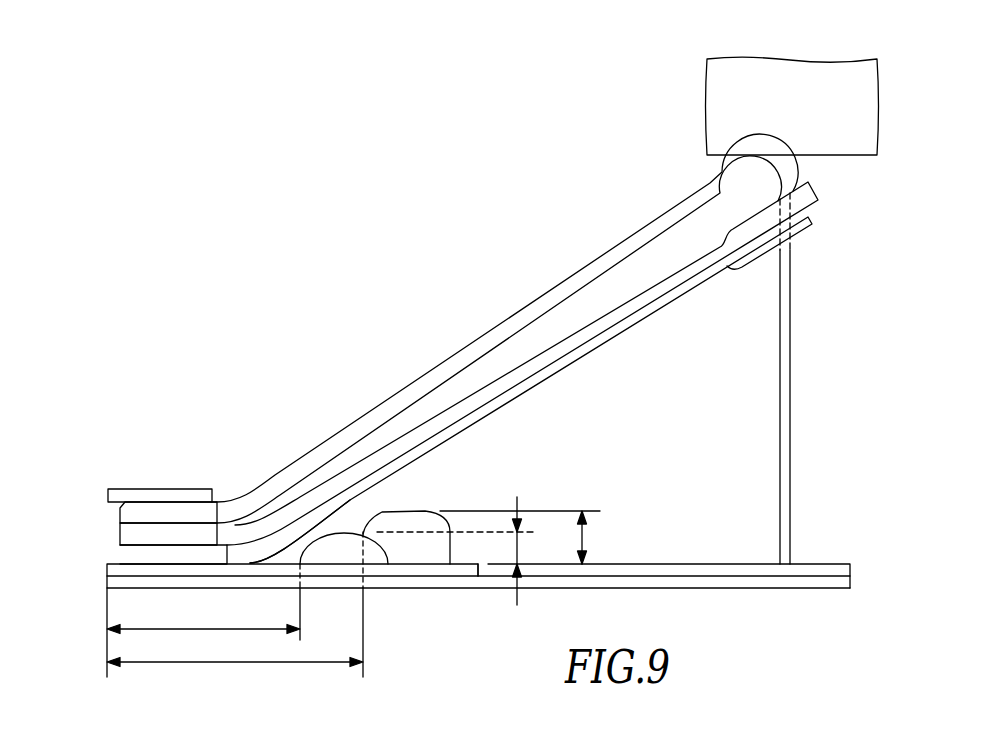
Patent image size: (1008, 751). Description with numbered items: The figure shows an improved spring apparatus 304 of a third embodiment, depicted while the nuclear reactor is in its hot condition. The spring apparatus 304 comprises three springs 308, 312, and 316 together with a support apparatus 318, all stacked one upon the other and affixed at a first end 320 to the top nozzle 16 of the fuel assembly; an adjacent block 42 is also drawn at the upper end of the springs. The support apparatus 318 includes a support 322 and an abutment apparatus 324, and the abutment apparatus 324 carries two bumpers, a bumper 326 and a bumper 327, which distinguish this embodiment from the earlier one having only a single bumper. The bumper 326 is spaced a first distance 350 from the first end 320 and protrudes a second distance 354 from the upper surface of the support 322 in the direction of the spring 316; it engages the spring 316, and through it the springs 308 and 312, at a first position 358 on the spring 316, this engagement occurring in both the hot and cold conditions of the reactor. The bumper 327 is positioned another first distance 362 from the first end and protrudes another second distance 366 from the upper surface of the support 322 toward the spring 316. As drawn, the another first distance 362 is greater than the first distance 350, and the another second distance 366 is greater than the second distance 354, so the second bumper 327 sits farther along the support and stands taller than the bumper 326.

The top nozzle 16 is at (672, 565).
The controller/housing block 42 is at (813, 58).
The spring apparatus 304 is at (463, 349).
The spring 308 is at (505, 319).
The spring 312 is at (588, 325).
The spring 316 is at (655, 316).
The support apparatus 318 is at (480, 567).
The first end 320 is at (107, 564).
The support 322 is at (380, 571).
The abutment apparatus 324 is at (457, 468).
The bumper 326 is at (372, 529).
The bumper 327 is at (447, 520).
The first distance 350 is at (212, 627).
The second distance 354 is at (517, 548).
The first position 358 is at (338, 532).
The another first distance 362 is at (238, 663).
The another second distance 366 is at (583, 538).